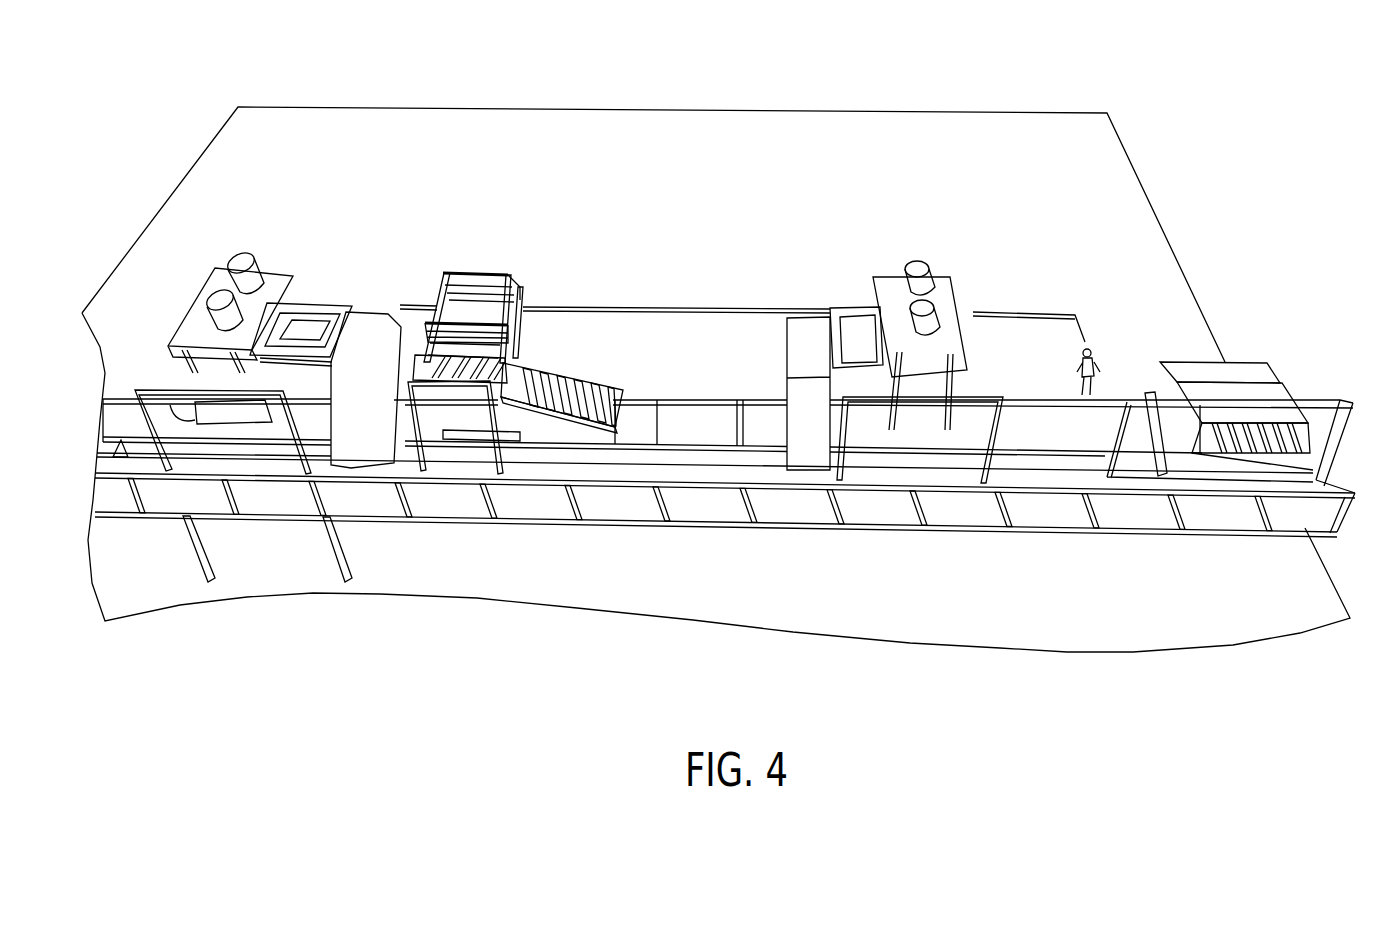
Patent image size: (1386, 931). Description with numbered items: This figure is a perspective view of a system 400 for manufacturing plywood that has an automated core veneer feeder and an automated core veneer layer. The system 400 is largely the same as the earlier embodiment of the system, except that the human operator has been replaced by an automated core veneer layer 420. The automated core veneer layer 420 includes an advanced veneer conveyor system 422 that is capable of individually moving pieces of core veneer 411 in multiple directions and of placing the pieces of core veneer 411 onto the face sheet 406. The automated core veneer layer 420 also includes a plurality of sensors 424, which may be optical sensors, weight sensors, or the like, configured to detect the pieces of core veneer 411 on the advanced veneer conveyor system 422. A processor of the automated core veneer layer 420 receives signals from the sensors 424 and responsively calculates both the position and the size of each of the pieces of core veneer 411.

The system for manufacturing plywood 400 is at (138, 104).
The face sheet 406 is at (327, 438).
The pieces of core veneer 411 is at (445, 322).
The automated core veneer layer 420 is at (633, 382).
The advanced veneer conveyor system 422 is at (583, 453).
The sensors 424 is at (528, 400).